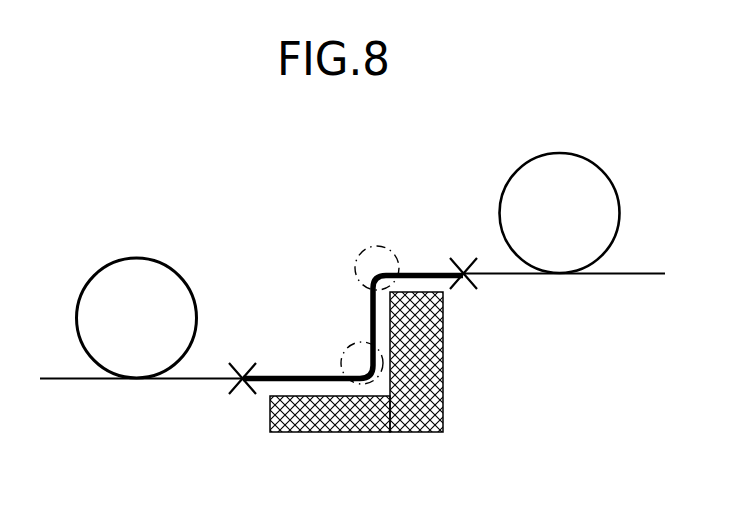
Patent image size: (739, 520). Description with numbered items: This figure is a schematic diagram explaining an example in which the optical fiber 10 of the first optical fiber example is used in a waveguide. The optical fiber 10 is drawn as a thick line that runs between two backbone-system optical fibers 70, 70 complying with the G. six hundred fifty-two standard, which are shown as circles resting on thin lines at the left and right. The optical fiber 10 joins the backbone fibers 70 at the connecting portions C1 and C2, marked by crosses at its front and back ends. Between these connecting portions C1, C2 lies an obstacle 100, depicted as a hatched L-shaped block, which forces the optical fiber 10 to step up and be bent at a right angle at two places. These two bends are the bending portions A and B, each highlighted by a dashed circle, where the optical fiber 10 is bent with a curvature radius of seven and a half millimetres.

The backbone-system optical fiber 70 is at (100, 259).
The optical fiber 10 is at (297, 374).
The obstacle 100 is at (343, 435).
The connecting portion C1 is at (241, 398).
The connecting portion C2 is at (460, 255).
The bending portion A is at (355, 354).
The bending portion B is at (371, 260).